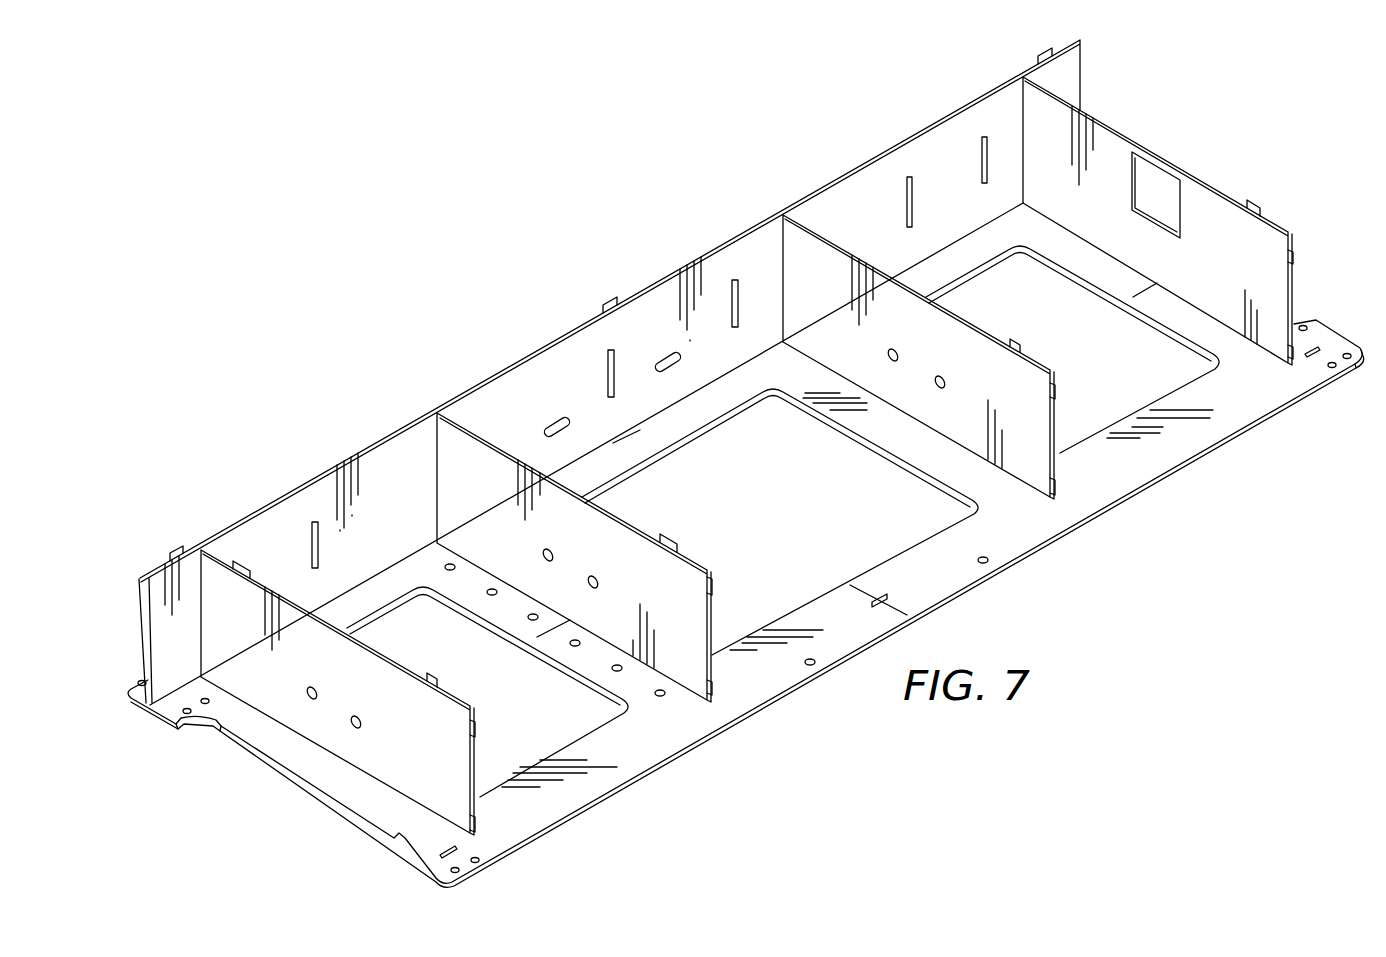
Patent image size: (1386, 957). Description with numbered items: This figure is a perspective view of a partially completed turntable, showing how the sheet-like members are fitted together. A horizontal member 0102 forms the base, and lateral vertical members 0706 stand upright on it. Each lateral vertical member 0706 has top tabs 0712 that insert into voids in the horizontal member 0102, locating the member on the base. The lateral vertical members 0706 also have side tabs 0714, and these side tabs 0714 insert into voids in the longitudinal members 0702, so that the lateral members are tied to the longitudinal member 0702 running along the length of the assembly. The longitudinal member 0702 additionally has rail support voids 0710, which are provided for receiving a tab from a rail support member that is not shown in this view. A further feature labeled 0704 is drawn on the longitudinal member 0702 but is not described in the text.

The horizontal member 0102 is at (1010, 532).
The longitudinal member 0702 is at (750, 228).
The tab 0704 is at (606, 300).
The lateral vertical member 0706 is at (525, 463).
The rail support void 0710 is at (999, 150).
The top tab 0712 is at (245, 555).
The side tab 0714 is at (713, 597).